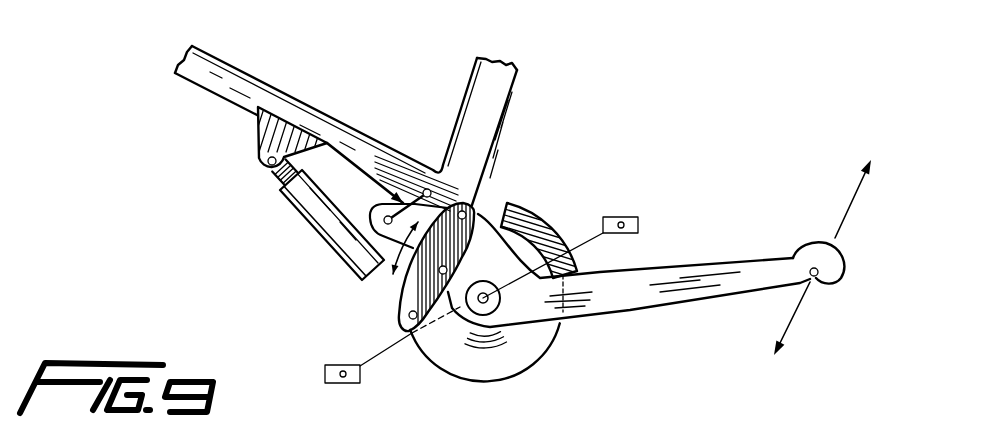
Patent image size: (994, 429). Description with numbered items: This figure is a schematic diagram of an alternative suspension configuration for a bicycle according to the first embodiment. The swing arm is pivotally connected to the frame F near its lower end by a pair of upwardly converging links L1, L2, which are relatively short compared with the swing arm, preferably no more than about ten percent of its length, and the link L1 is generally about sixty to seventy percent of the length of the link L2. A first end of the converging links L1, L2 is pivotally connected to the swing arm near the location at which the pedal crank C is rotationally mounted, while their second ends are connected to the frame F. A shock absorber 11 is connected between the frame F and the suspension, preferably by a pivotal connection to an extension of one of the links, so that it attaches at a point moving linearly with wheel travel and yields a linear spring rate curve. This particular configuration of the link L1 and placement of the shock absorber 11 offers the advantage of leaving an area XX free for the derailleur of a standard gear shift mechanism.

The frame F is at (505, 85).
The shock absorber 11 is at (323, 246).
The link L1 is at (470, 205).
The link L2 is at (392, 200).
The area XX is at (570, 215).
The pedal crank C is at (543, 345).